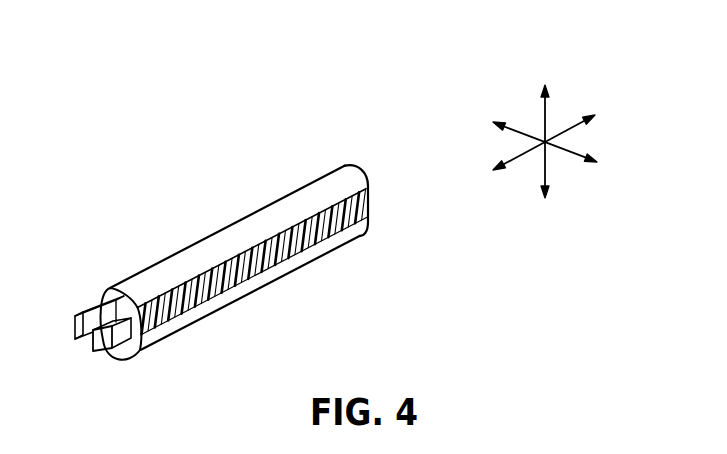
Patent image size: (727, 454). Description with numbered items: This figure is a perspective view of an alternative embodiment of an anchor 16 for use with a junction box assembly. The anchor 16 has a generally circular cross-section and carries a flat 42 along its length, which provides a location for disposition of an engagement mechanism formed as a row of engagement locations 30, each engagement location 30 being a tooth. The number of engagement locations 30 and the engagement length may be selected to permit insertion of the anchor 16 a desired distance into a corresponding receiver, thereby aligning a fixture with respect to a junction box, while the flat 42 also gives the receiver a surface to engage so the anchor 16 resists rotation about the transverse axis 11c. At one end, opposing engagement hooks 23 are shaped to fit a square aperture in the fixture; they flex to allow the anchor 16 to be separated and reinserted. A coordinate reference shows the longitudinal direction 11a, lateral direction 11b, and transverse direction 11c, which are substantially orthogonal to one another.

The anchor 16 is at (156, 240).
The engagement hooks 23 is at (90, 358).
The engagement locations 30 is at (251, 273).
The flat 42 is at (380, 213).
The longitudinal direction 11a is at (547, 110).
The lateral direction 11b is at (570, 156).
The transverse direction 11c is at (577, 127).